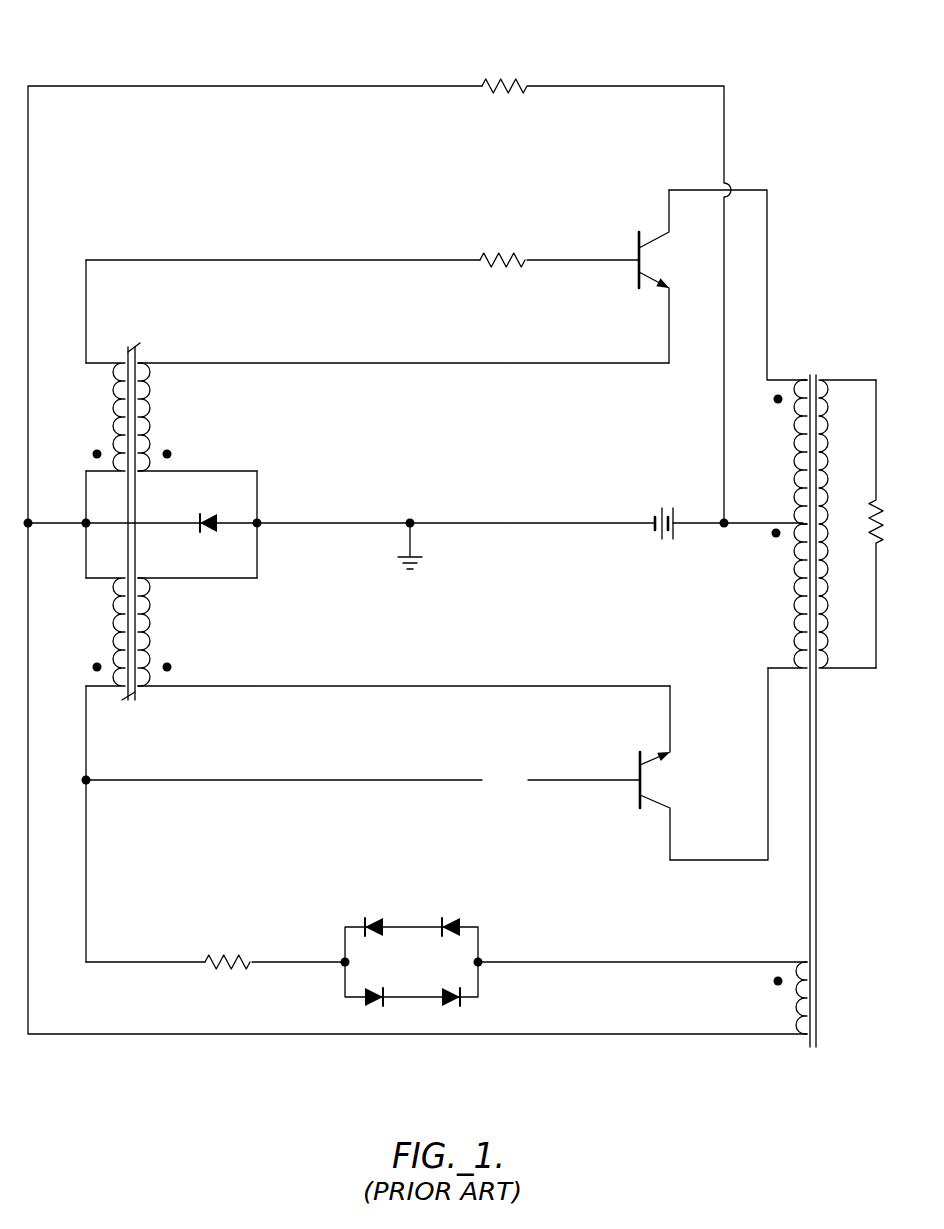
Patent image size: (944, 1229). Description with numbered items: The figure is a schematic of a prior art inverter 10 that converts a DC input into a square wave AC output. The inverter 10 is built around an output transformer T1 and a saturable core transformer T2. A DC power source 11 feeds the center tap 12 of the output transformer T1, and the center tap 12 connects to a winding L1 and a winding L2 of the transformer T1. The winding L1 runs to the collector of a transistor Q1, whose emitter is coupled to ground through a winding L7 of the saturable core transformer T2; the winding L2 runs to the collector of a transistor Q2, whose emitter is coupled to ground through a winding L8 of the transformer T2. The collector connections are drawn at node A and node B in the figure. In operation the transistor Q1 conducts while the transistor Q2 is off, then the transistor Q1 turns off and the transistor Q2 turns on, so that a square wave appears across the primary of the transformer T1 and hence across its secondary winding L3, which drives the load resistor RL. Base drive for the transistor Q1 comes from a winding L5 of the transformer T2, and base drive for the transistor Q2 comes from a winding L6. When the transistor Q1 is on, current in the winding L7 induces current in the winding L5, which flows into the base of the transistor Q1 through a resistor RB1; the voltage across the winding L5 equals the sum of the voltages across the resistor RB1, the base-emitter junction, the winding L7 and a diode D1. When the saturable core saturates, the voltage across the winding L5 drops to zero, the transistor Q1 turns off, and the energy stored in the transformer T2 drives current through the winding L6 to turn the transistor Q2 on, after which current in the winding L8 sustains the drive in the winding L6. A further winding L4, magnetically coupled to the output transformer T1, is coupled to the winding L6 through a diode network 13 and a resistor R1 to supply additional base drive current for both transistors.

The inverter 10 is at (772, 55).
The resistor RB1 is at (497, 256).
The transistor Q1 is at (660, 258).
The node A is at (767, 190).
The saturable core transformer T2 is at (136, 500).
The winding L5 is at (108, 408).
The winding L7 is at (153, 428).
The winding L6 is at (108, 622).
The winding L8 is at (152, 640).
The diode D1 is at (212, 512).
The DC power source 11 is at (661, 510).
The center tap 12 is at (796, 520).
The output transformer T1 is at (818, 748).
The winding L1 is at (795, 443).
The winding L2 is at (795, 600).
The secondary winding L3 is at (838, 588).
The load resistor RL is at (878, 525).
The transistor Q2 is at (660, 782).
The node B is at (768, 860).
The resistor R1 is at (230, 955).
The diode network 13 is at (423, 974).
The winding L4 is at (790, 1003).